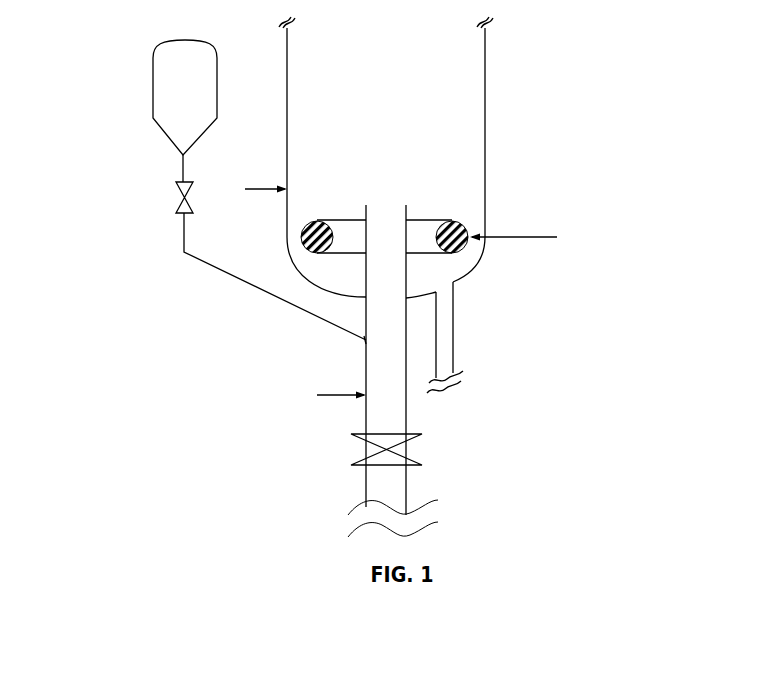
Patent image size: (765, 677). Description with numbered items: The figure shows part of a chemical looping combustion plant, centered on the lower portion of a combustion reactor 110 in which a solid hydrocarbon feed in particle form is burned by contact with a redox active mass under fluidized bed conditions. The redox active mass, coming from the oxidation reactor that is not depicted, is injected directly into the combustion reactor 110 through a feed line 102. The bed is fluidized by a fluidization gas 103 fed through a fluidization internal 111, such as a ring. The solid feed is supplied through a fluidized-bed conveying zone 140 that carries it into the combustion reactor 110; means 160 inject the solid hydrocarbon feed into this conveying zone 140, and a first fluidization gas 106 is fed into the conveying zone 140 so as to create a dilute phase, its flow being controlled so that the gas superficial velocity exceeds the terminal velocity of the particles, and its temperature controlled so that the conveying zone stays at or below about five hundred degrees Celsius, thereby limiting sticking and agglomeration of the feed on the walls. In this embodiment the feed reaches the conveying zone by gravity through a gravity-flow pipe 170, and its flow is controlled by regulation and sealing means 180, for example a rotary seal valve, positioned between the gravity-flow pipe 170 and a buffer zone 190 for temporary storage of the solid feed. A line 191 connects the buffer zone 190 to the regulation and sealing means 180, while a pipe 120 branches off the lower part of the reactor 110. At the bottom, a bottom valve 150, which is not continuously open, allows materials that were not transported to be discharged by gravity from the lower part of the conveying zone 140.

The buffer zone 190 is at (153, 97).
The hopper outlet 191 is at (183, 165).
The regulation and sealing means 180 is at (177, 200).
The gravity-flow pipe 170 is at (213, 268).
The feed line 102 is at (295, 157).
The combustion reactor 110 is at (485, 70).
The fluidization internal 111 is at (422, 220).
The fluidization gas 103 is at (523, 237).
The drain pipe 120 is at (453, 335).
The fluidized-bed conveying zone 140 is at (366, 375).
The means for injecting the solid hydrocarbon feed 160 is at (366, 341).
The first fluidization gas 106 is at (343, 395).
The bottom valve 150 is at (352, 467).